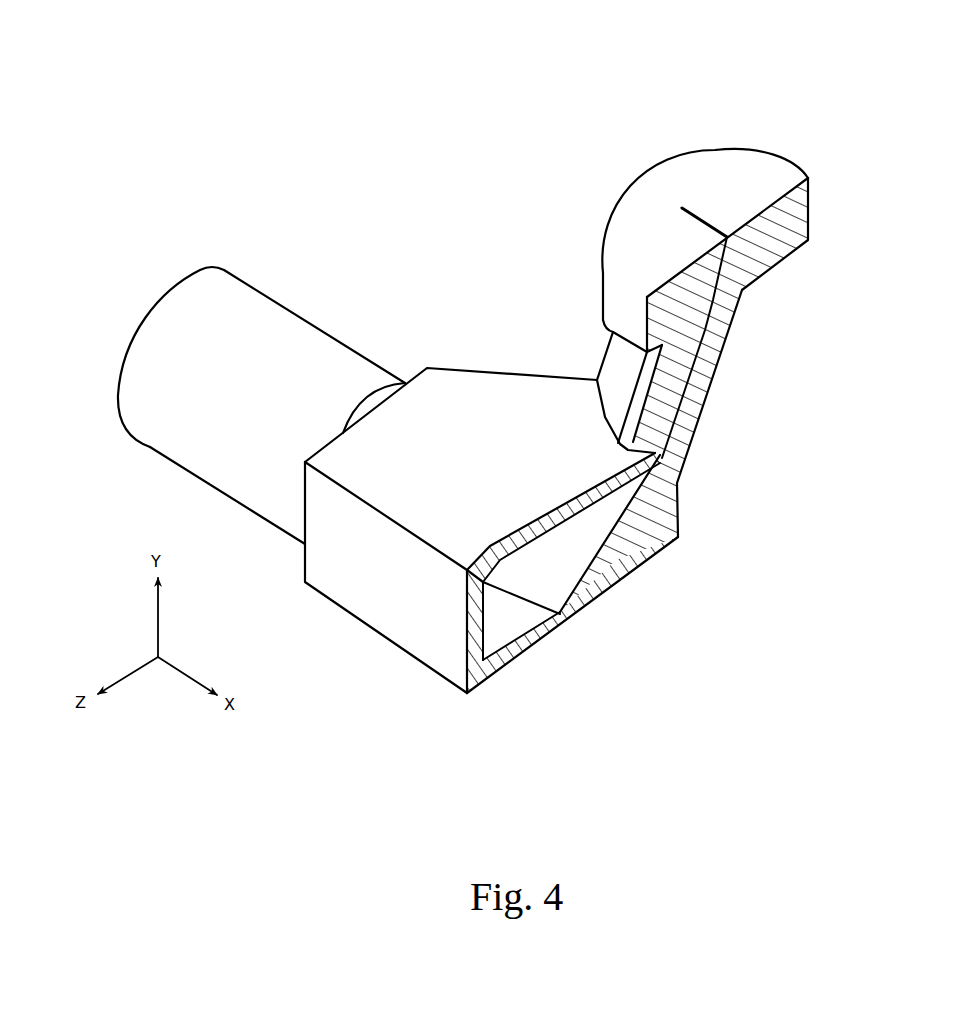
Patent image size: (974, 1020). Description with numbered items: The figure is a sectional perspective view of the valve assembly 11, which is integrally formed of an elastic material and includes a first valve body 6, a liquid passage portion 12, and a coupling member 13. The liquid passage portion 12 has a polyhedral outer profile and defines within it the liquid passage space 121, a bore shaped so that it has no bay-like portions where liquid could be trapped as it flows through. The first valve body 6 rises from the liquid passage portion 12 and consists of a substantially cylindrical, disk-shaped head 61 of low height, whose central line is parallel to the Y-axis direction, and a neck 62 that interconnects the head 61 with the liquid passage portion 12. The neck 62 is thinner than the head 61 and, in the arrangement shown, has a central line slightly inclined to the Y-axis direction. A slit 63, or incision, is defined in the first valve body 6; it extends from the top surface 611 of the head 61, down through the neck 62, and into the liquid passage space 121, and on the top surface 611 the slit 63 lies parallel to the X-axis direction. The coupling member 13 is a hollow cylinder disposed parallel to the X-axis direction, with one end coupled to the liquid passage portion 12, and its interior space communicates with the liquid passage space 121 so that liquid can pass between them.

The valve assembly 11 is at (410, 141).
The liquid passage portion 12 is at (490, 417).
The liquid passage space 121 is at (558, 563).
The coupling member 13 is at (248, 335).
The first valve body 6 is at (660, 157).
The head 61 is at (783, 230).
The top surface 611 is at (760, 188).
The neck 62 is at (690, 400).
The slit 63 is at (703, 217).